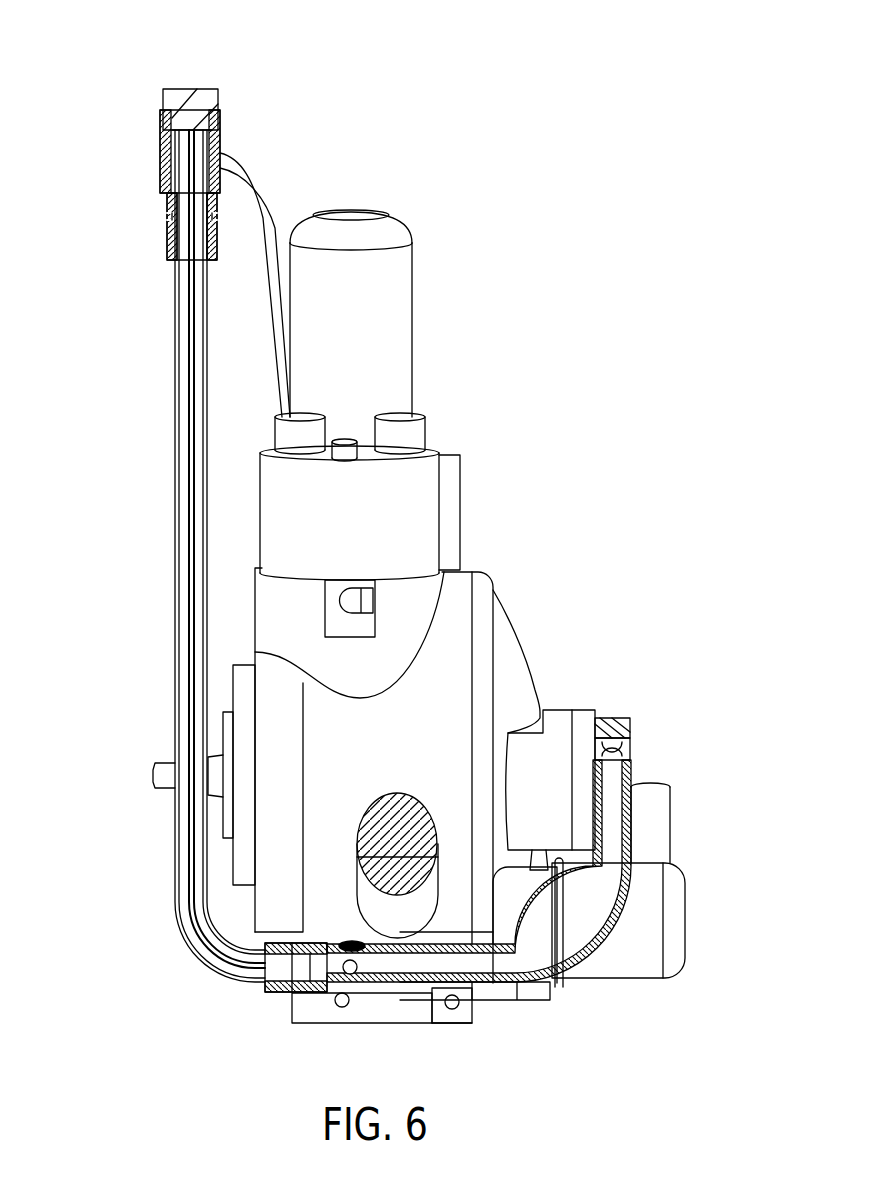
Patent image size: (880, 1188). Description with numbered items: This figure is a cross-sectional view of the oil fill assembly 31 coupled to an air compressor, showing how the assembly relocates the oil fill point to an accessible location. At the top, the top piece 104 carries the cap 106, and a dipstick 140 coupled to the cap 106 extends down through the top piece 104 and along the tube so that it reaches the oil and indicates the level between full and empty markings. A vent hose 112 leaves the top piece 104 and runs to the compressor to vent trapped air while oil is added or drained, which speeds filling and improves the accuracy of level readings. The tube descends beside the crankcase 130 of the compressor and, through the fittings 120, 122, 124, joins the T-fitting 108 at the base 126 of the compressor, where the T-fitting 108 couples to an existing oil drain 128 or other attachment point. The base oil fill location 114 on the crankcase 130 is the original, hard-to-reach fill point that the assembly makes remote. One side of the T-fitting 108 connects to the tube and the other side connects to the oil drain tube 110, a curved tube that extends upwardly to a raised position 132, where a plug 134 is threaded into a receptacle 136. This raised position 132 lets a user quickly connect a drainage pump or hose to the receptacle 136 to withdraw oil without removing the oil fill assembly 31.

The oil fill assembly 31 is at (100, 116).
The top piece 104 is at (221, 140).
The cap 106 is at (219, 97).
The T-fitting 108 is at (325, 995).
The oil drain tube 110 is at (600, 930).
The vent hose 112 is at (264, 220).
The base oil fill location 114 is at (355, 808).
The fitting 120 is at (163, 238).
The fitting 122 is at (270, 991).
The fitting 124 is at (432, 992).
The base 126 is at (474, 1015).
The oil drain 128 is at (344, 944).
The crankcase 130 is at (450, 640).
The raised position 132 is at (618, 745).
The plug 134 is at (618, 718).
The receptacle 136 is at (633, 753).
The dipstick 140 is at (190, 458).